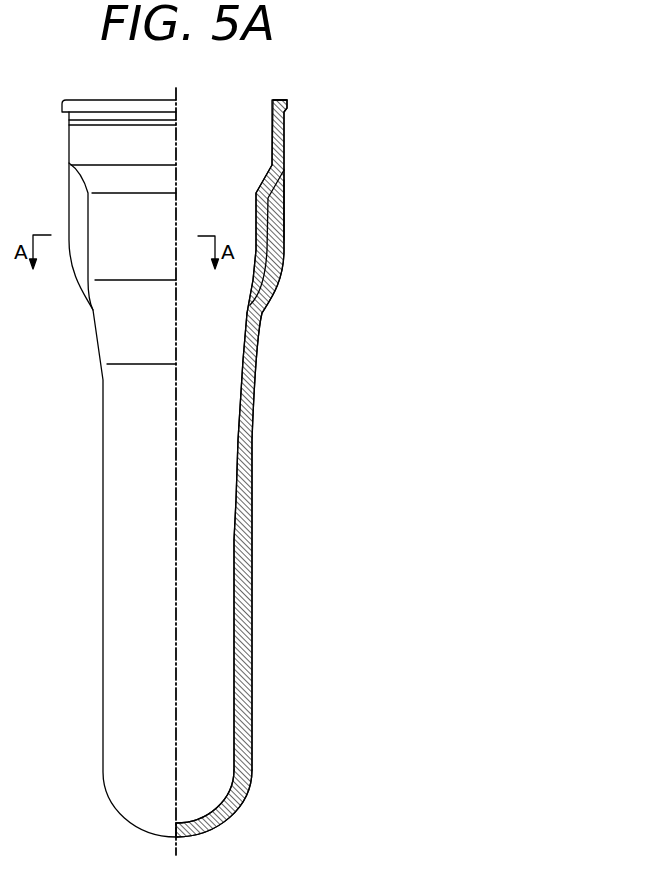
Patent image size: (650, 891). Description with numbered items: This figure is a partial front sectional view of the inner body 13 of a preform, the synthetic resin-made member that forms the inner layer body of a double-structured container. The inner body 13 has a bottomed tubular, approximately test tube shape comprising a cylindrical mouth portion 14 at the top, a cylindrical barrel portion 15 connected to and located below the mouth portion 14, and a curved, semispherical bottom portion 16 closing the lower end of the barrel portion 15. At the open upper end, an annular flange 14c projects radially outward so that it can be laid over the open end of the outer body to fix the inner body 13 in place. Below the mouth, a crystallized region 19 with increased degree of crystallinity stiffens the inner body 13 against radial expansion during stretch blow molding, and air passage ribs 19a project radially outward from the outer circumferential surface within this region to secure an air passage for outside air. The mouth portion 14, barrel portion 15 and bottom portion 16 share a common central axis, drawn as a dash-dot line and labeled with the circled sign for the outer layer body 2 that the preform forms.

The outer layer body 2 is at (176, 460).
The inner body 13 is at (308, 472).
The mouth portion 14 is at (297, 129).
The flange 14c is at (288, 103).
The barrel portion 15 is at (270, 540).
The bottom portion 16 is at (227, 836).
The crystallized region 19 is at (282, 231).
The air passage rib 19a is at (283, 208).